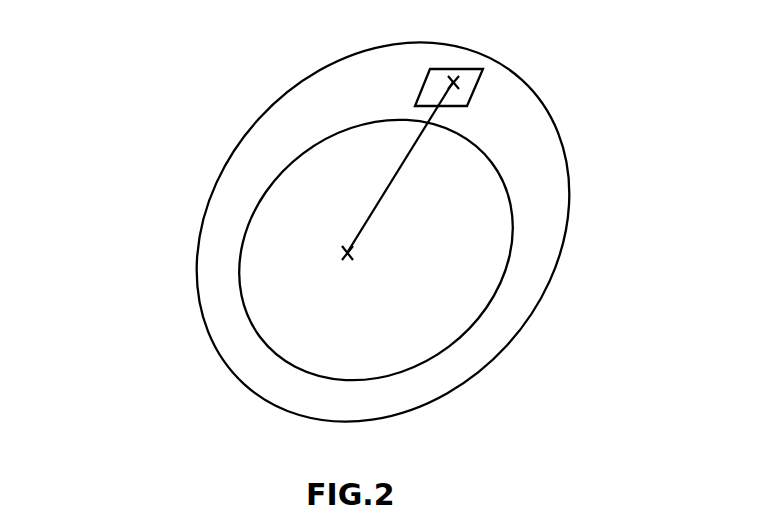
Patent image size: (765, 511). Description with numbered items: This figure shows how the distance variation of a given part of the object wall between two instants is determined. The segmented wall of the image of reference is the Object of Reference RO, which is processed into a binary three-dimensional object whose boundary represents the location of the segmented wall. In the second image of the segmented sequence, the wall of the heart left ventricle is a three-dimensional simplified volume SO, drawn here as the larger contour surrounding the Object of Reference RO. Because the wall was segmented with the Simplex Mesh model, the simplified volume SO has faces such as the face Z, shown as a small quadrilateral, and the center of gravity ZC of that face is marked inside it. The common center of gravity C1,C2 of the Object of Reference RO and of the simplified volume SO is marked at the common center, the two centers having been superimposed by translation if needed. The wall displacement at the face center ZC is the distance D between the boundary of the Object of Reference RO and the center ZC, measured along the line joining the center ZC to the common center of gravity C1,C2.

The simplified volume SO is at (503, 360).
The Object of Reference RO is at (512, 235).
The centers of gravity C1,C2 is at (341, 253).
The distance D is at (433, 115).
The face Z is at (444, 84).
The center of gravity of the face ZC is at (462, 83).